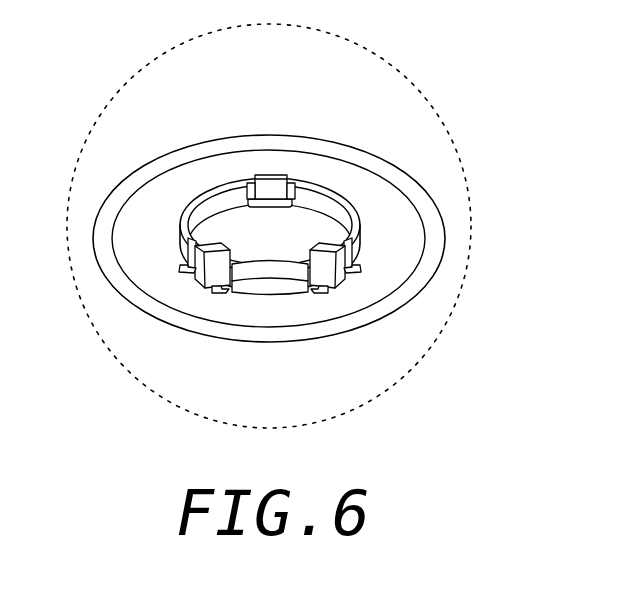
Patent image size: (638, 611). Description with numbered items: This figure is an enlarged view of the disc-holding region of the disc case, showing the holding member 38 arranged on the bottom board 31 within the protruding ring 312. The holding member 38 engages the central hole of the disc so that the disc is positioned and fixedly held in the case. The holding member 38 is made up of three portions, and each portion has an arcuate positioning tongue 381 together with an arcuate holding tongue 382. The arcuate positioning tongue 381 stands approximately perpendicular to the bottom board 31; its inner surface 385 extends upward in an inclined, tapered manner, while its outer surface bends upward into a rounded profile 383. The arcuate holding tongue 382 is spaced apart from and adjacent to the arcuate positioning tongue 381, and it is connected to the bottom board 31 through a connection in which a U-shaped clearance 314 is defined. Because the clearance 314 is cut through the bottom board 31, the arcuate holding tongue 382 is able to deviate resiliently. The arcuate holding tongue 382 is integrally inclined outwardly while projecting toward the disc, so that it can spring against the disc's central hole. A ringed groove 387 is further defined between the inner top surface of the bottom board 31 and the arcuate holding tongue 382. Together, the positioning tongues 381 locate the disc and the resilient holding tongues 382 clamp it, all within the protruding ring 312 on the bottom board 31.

The bottom board 31 is at (317, 249).
The protruding ring 312 is at (423, 273).
The U-shaped clearance 314 is at (293, 198).
The holding member 38 is at (309, 224).
The arcuate positioning tongue 381 is at (192, 191).
The arcuate holding tongue 382 is at (234, 122).
The rounded profile 383 is at (353, 220).
The inner surface 385 is at (232, 196).
The ringed groove 387 is at (267, 294).